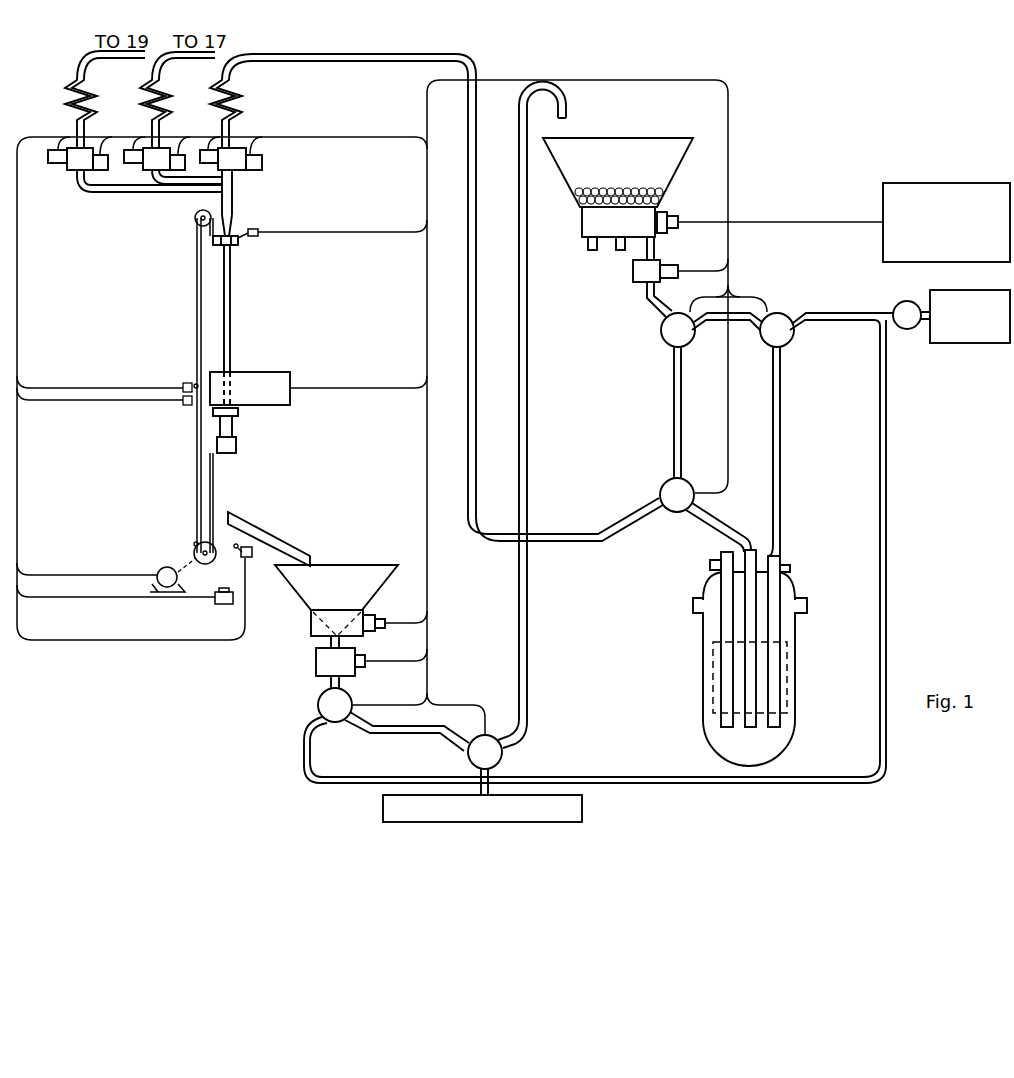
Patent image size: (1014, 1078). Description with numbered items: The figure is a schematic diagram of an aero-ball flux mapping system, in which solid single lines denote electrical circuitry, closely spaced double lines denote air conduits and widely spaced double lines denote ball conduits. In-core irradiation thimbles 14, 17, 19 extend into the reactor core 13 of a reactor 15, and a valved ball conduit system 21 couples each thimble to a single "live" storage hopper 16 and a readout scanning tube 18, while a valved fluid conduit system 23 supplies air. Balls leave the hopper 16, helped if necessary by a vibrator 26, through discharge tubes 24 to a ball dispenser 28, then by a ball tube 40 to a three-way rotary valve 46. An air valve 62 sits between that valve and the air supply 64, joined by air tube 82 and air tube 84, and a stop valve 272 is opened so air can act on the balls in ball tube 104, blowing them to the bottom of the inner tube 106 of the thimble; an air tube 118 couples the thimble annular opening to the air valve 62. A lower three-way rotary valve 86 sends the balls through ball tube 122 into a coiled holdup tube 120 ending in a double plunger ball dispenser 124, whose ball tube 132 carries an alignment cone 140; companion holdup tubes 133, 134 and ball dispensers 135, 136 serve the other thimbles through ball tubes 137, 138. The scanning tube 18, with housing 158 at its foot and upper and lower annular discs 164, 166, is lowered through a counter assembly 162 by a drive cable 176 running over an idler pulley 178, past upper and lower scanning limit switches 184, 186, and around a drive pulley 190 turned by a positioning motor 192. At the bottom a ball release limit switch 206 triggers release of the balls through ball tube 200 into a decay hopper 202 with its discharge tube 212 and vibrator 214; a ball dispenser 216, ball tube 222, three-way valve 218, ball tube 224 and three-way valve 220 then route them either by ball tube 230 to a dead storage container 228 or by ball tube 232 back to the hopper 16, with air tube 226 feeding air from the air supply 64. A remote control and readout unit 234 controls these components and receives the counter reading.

The reactor core 13 is at (790, 684).
The in-core irradiation thimble 14 is at (754, 730).
The reactor 15 is at (797, 634).
The "live" storage hopper 16 is at (645, 138).
The thimble 17 is at (731, 730).
The readout scanning tube 18 is at (232, 300).
The thimble 19 is at (776, 730).
The ball conduit system 21 is at (632, 518).
The fluid conduit system 23 is at (878, 344).
The discharge tube 24 is at (658, 252).
The vibrator 26 is at (676, 214).
The ball dispenser 28 is at (633, 278).
The ball tube 40 is at (642, 300).
The three-way rotary valve 46 is at (660, 334).
The air valve 62 is at (785, 312).
The air supply 64 is at (982, 290).
The air tube 82 is at (742, 320).
The air tube 84 is at (842, 312).
The three-way rotary valve 86 is at (694, 485).
The ball tube 104 is at (698, 412).
The inner tube 106 is at (719, 524).
The air tube 118 is at (781, 422).
The coiled holdup tube 120 is at (240, 100).
The ball tube 122 is at (468, 62).
The double plunger ball dispenser 124 is at (236, 172).
The ball tube 132 is at (233, 200).
The holdup tube 133 is at (150, 94).
The holdup tube 134 is at (72, 94).
The ball dispenser 135 is at (170, 152).
The ball dispenser 136 is at (72, 170).
The ball tube 137 is at (181, 190).
The ball tube 138 is at (108, 193).
The alignment cone 140 is at (233, 222).
The housing 158 is at (238, 447).
The counter assembly 162 is at (265, 372).
The upper annular disc 164 is at (240, 243).
The lower annular disc 166 is at (240, 416).
The drive cable 176 is at (196, 270).
The idler pulley 178 is at (196, 216).
The upper scanning limit switch 184 is at (183, 386).
The lower scanning limit switch 186 is at (183, 403).
The drive pulley 190 is at (194, 553).
The positioning motor 192 is at (160, 570).
The ball tube 200 is at (254, 524).
The decay hopper 202 is at (372, 563).
The ball release limit switch 206 is at (241, 557).
The discharge tube 212 is at (330, 641).
The vibrator 214 is at (372, 615).
The ball dispenser 216 is at (316, 658).
The three-way valve 218 is at (318, 705).
The three-way valve 220 is at (503, 752).
The ball tube 222 is at (331, 680).
The ball tube 224 is at (410, 733).
The air tube 226 is at (888, 550).
The dead storage container 228 is at (587, 813).
The ball tube 230 is at (478, 773).
The ball tube 232 is at (529, 446).
The remote control and readout unit 234 is at (928, 183).
The stop valve 272 is at (903, 301).